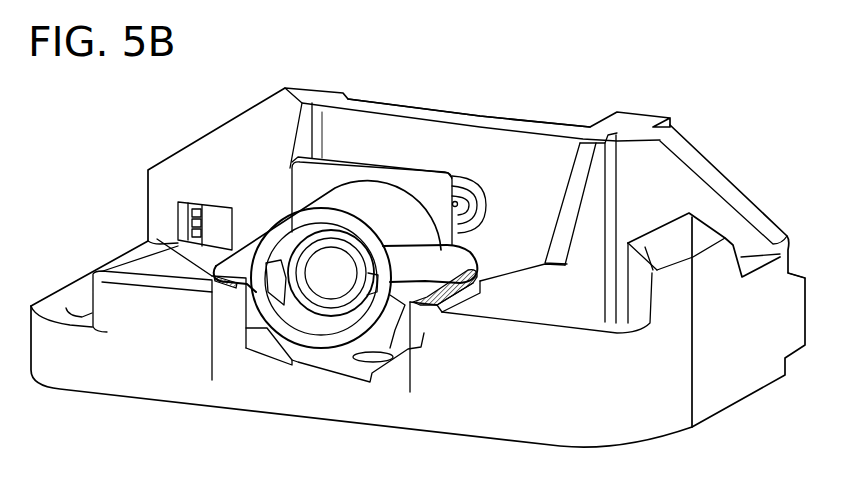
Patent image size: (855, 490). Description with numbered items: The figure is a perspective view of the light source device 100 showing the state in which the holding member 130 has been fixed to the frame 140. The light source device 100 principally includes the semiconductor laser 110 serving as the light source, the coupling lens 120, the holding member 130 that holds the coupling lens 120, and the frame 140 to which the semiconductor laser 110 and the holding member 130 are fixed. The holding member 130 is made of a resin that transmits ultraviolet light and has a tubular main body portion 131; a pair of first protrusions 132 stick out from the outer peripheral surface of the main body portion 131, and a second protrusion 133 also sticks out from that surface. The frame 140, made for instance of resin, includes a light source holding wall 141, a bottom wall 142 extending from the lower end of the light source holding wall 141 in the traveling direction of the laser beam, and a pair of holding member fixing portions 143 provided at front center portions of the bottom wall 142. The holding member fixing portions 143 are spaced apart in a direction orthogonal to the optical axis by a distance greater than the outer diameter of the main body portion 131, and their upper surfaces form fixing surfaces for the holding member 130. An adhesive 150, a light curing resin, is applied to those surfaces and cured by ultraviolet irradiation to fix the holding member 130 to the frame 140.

The light source device 100 is at (656, 70).
The semiconductor laser 110 is at (470, 197).
The coupling lens 120 is at (318, 268).
The holding member 130 is at (382, 157).
The main body portion 131 is at (398, 213).
The first protrusions 132 is at (248, 250).
The second protrusion 133 is at (332, 173).
The frame 140 is at (714, 176).
The light source holding wall 141 is at (540, 126).
The bottom wall 142 is at (330, 358).
The holding member fixing portions 143 is at (233, 288).
The adhesive 150 is at (212, 262).